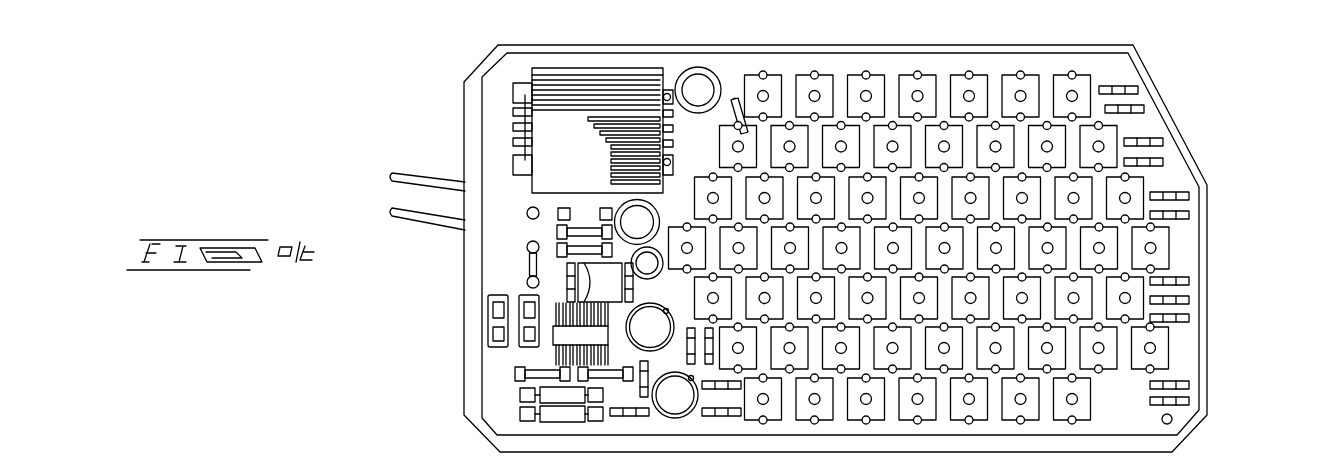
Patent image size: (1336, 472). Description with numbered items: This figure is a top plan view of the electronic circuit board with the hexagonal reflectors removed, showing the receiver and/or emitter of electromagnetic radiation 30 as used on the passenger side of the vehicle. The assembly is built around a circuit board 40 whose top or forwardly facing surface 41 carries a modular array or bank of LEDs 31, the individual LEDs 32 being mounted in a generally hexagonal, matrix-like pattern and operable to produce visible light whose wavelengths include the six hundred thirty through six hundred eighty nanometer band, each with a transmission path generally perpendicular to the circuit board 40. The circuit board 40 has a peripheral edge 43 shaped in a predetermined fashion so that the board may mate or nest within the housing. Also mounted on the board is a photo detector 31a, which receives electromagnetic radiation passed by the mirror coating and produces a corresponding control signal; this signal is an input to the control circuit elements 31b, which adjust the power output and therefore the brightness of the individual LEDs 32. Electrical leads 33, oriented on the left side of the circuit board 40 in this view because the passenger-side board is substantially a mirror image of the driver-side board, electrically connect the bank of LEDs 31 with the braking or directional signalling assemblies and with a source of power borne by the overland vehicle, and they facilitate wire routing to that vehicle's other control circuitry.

The receiver and/or emitter of electromagnetic radiation 30 is at (1233, 172).
The bank of LEDs 31 is at (1071, 75).
The photo detector 31a is at (617, 238).
The control circuit elements 31b is at (503, 364).
The LEDs 32 is at (985, 80).
The electrical leads 33 is at (400, 212).
The circuit board 40 is at (1178, 127).
The top or forwardly facing surface 41 is at (733, 68).
The peripheral edge 43 is at (640, 45).